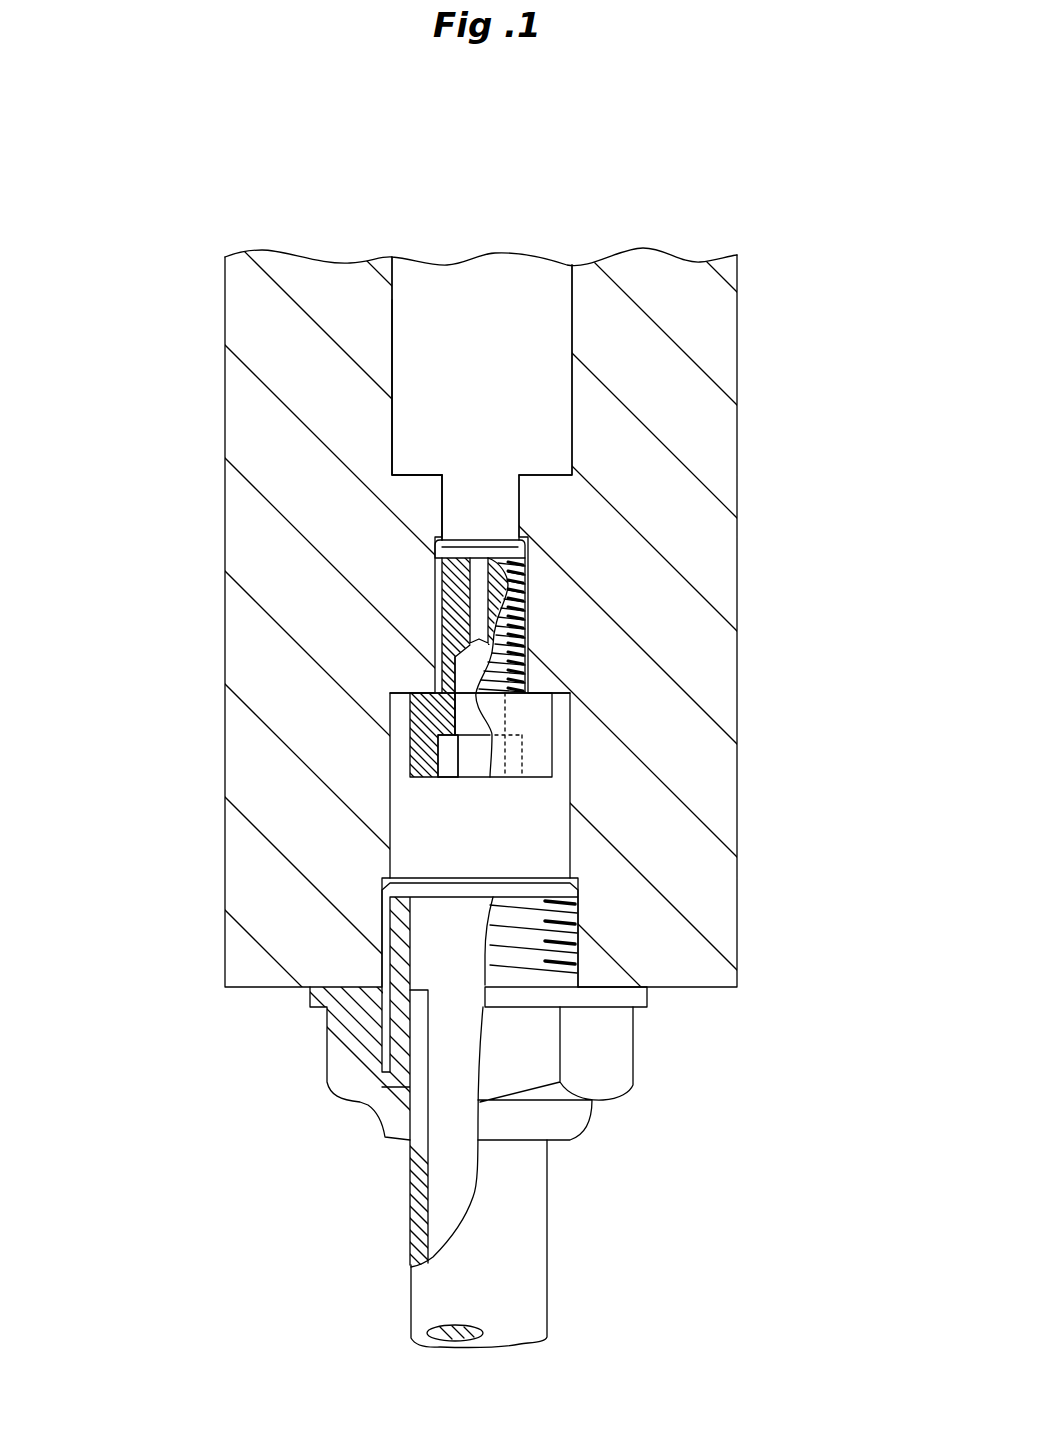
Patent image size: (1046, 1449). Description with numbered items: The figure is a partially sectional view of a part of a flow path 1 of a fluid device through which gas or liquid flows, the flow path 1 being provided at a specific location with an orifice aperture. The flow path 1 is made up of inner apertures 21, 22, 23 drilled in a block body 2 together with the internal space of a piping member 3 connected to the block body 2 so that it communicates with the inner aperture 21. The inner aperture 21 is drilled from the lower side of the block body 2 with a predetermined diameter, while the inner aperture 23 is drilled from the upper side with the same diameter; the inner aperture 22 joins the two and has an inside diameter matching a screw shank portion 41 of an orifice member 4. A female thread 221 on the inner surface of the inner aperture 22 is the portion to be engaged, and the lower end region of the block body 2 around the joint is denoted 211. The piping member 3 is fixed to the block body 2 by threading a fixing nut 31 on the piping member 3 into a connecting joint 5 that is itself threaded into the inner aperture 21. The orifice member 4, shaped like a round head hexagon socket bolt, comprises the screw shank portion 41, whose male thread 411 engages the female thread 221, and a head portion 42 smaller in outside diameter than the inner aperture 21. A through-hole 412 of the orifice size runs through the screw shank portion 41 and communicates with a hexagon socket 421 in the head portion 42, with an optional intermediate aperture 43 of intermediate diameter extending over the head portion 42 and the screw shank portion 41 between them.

The flow path 1 is at (513, 319).
The block body 2 is at (211, 390).
The inner aperture 21 is at (390, 833).
The flanged nut 211 is at (583, 980).
The inner aperture 22 is at (520, 525).
The female thread 221 is at (437, 628).
The inner aperture 23 is at (392, 327).
The piping member 3 is at (562, 1229).
The fixing nut 31 is at (622, 1098).
The orifice member 4 is at (447, 683).
The screw shank portion 41 is at (447, 683).
The male thread 411 is at (539, 610).
The through-hole 412 is at (472, 585).
The head portion 42 is at (550, 748).
The hexagon socket 421 is at (440, 750).
The intermediate aperture 43 is at (455, 713).
The connecting joint 5 is at (377, 1038).